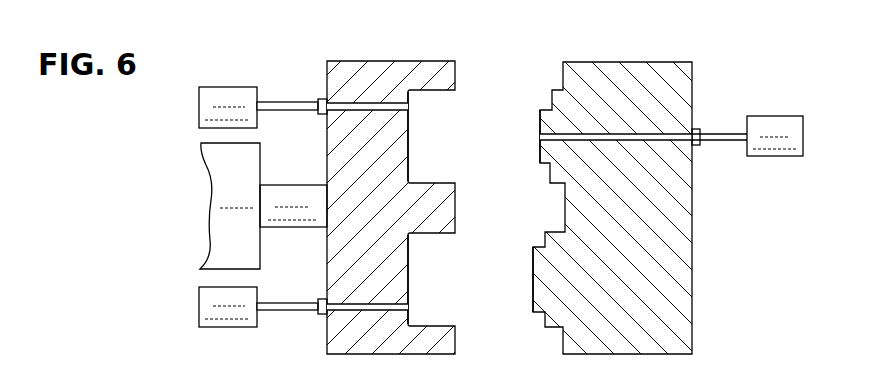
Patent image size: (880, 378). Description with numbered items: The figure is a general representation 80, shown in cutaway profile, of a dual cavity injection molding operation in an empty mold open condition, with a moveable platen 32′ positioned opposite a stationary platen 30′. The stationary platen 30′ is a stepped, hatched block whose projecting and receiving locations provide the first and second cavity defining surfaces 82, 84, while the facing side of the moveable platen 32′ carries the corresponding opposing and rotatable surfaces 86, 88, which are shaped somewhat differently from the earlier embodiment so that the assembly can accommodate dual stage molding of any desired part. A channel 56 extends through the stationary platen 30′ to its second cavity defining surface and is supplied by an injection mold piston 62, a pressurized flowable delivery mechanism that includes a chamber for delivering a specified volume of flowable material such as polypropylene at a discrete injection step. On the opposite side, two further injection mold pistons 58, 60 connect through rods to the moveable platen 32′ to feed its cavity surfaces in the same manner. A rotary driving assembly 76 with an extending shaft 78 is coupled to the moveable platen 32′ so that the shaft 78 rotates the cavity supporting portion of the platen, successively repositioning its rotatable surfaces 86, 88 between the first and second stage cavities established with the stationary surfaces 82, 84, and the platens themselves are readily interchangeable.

The stationary platen 30′ is at (617, 62).
The moveable platen 32′ is at (383, 61).
The channel 56 is at (657, 130).
The injection mold piston 58 is at (228, 315).
The injection mold piston 60 is at (227, 95).
The injection mold piston 62 is at (777, 127).
The rotary driving assembly 76 is at (230, 224).
The shaft 78 is at (291, 200).
The general representation of a dual cavity injection molding operation 80 is at (137, 190).
The first cavity defining surface 82 is at (533, 273).
The second cavity defining surface 84 is at (540, 125).
The opposing rotatable surface 86 is at (409, 296).
The opposing rotatable surface 88 is at (409, 155).